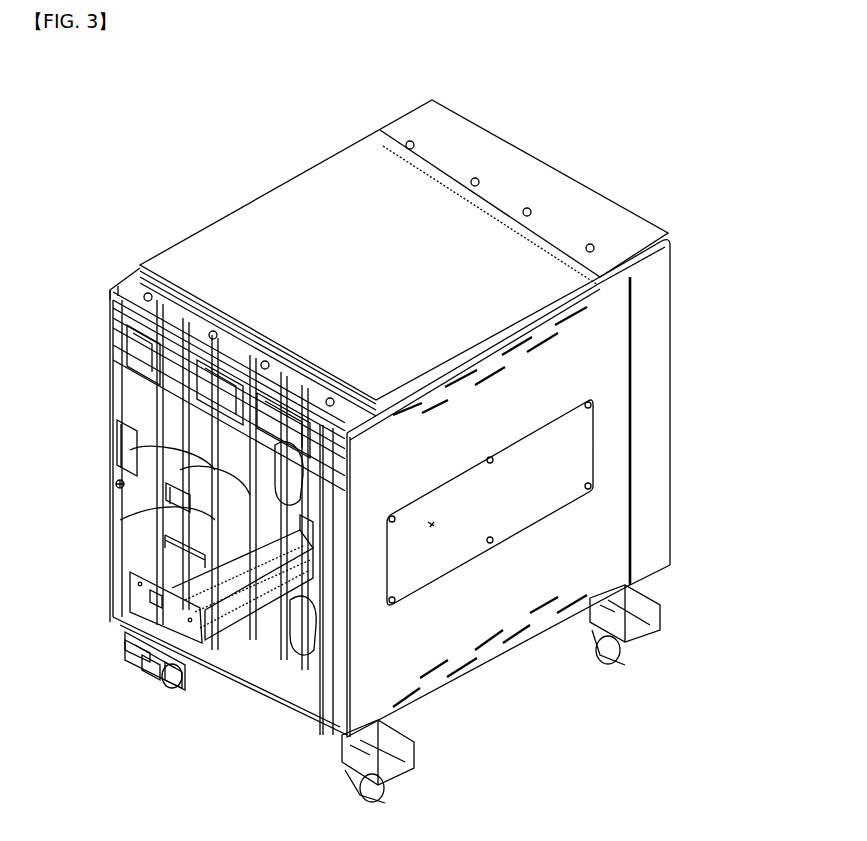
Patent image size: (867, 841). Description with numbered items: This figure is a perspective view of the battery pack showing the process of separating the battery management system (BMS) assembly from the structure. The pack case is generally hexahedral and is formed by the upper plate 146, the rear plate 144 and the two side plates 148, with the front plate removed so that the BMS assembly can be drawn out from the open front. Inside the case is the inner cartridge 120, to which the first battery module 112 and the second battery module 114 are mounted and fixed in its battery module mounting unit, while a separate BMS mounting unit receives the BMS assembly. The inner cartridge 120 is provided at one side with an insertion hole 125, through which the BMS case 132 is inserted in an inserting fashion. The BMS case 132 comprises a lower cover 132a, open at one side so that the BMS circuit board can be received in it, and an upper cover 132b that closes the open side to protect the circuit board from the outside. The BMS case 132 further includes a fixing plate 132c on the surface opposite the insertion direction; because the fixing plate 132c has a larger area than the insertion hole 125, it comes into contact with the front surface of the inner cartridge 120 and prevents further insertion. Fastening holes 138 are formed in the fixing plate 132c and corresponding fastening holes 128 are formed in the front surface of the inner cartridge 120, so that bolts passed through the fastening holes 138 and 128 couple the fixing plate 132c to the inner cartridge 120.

The upper plate 146 is at (302, 212).
The rear plate 144 is at (650, 398).
The side plate 148 is at (598, 506).
The first battery module 112 is at (117, 428).
The second battery module 114 is at (116, 483).
The fastening holes 128 is at (178, 496).
The insertion hole 125 is at (183, 543).
The fastening holes 138 is at (126, 586).
The BMS case 132 is at (112, 727).
The lower cover 132a is at (130, 650).
The upper cover 132b is at (148, 666).
The fixing plate 132c is at (156, 725).
The inner cartridge 120 is at (335, 722).